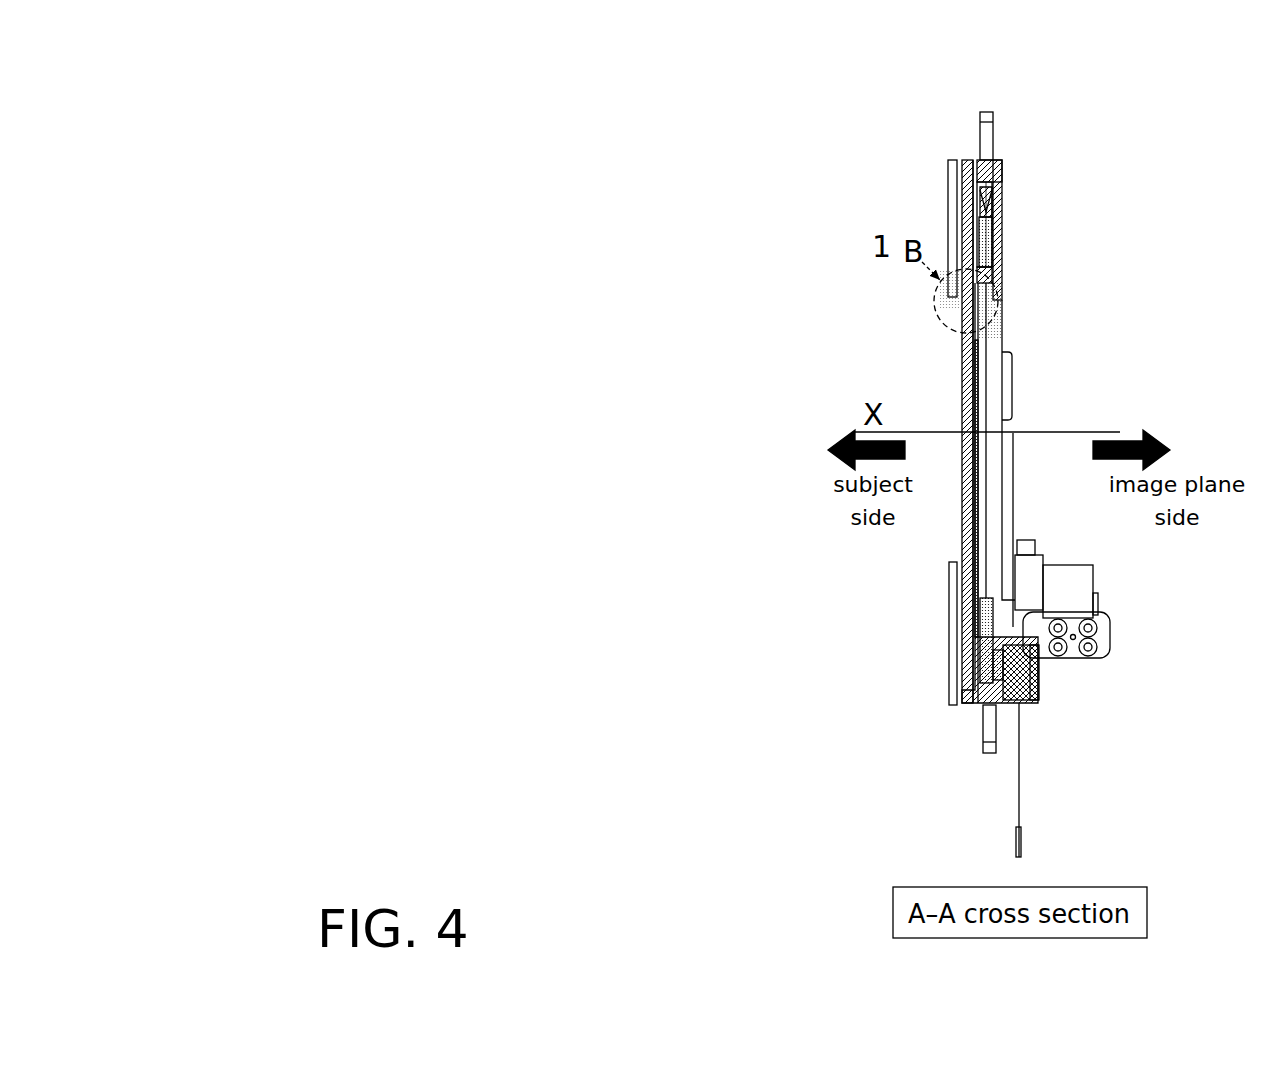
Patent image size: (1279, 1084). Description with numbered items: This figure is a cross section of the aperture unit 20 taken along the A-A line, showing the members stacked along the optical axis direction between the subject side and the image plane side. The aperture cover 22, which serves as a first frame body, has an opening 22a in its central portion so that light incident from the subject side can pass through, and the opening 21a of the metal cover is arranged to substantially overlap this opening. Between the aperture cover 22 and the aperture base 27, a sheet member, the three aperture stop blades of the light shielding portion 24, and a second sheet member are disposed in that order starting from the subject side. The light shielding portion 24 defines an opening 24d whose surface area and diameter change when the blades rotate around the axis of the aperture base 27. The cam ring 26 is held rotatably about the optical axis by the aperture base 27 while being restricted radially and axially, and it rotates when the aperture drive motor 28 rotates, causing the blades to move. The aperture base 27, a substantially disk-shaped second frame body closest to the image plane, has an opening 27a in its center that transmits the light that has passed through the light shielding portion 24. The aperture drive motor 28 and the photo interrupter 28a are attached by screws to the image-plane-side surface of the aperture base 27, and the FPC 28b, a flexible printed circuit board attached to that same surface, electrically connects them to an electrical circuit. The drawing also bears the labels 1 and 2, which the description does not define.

The aperture unit 20 is at (942, 135).
The imaging apparatus 1 is at (929, 224).
The cover glass / plate 2 is at (953, 215).
The opening 21a is at (950, 317).
The aperture cover 22 is at (967, 197).
The opening 22a is at (965, 373).
The light shielding portion 24 is at (985, 190).
The opening 24d is at (970, 428).
The cam ring 26 is at (983, 237).
The aperture base 27 is at (1002, 180).
The opening 27a is at (997, 313).
The aperture drive motor 28 is at (1080, 582).
The photo interrupter 28a is at (1030, 692).
The FPC 28b is at (1022, 790).